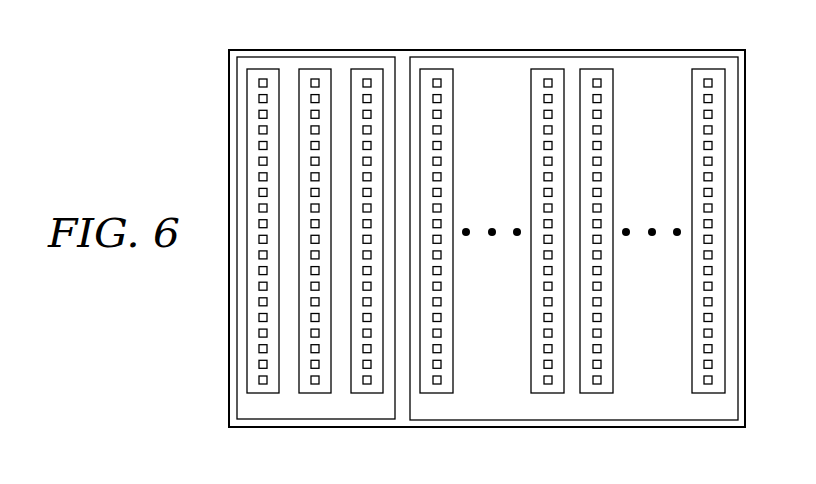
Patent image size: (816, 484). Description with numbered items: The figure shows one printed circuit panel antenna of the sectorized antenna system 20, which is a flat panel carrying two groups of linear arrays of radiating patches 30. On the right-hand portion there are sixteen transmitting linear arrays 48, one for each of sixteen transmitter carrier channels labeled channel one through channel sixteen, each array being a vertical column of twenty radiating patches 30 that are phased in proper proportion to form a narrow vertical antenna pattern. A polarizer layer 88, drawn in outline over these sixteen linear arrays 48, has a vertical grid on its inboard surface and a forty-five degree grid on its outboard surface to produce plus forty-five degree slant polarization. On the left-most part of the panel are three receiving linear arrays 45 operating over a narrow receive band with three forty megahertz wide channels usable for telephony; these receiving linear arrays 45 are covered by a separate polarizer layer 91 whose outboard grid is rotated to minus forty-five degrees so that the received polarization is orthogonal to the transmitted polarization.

The sectorized antenna system 20 is at (259, 83).
The radiating patch 30 is at (441, 83).
The receiving linear array 45 is at (260, 393).
The linear array 48 is at (453, 172).
The polarizer layer 88 is at (510, 57).
The polarizer layer 91 is at (332, 57).